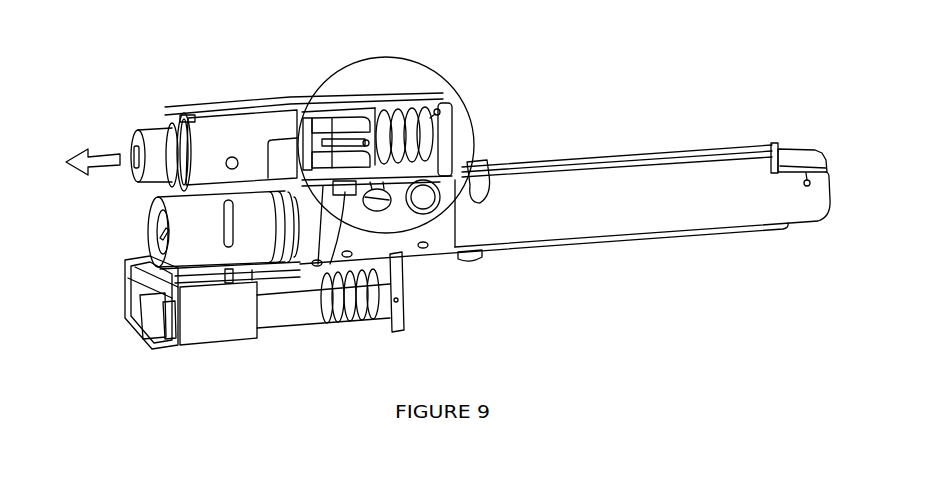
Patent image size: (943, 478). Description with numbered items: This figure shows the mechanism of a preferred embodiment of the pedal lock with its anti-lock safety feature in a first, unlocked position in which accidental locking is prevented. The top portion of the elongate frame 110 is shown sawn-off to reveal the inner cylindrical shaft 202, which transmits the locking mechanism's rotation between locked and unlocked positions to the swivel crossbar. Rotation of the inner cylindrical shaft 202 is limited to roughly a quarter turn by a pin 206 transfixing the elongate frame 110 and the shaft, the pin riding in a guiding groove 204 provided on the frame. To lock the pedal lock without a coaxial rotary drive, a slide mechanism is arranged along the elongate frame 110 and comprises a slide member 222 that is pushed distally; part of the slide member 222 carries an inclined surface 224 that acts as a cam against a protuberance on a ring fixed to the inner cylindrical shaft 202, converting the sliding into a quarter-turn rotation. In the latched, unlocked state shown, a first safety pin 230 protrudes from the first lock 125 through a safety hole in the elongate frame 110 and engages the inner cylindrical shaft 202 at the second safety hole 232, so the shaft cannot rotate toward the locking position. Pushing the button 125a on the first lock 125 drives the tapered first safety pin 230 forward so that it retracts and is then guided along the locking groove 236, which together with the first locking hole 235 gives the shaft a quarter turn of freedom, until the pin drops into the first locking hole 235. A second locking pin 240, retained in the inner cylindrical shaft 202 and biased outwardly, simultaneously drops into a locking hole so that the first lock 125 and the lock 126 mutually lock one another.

The elongate frame 110 is at (672, 232).
The first lock 125 is at (202, 147).
The button 125a is at (150, 135).
The lock 126 is at (147, 233).
The inner cylindrical shaft 202 is at (580, 212).
The guiding groove 204 is at (488, 172).
The pin 206 is at (468, 262).
The slide member 222 is at (188, 347).
The inclined surface 224 is at (276, 300).
The first safety pin 230 is at (342, 110).
The second safety hole 232 is at (347, 170).
The first locking hole 235 is at (377, 211).
The locking groove 236 is at (397, 150).
The second locking pin 240 is at (428, 195).